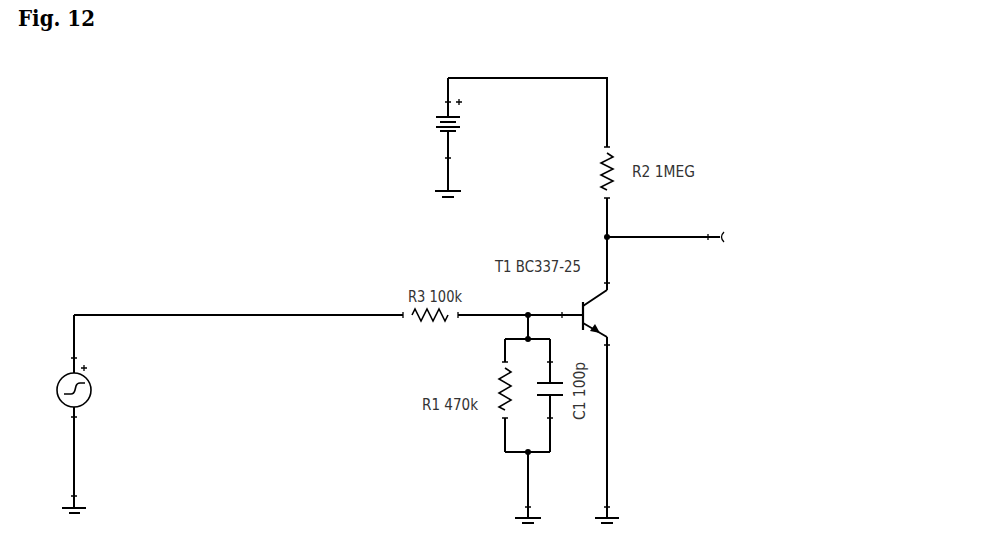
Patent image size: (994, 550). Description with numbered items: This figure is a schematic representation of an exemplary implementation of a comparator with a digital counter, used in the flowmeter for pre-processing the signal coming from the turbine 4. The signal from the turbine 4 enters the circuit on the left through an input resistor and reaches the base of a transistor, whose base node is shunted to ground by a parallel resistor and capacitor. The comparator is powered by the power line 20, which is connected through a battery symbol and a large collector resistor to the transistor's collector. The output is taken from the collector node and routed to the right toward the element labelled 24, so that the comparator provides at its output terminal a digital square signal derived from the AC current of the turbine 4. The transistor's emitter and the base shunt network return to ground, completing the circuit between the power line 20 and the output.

The power line 20 is at (333, 115).
The microcontroller (µC) 24 is at (762, 227).
The turbine 4 is at (190, 342).